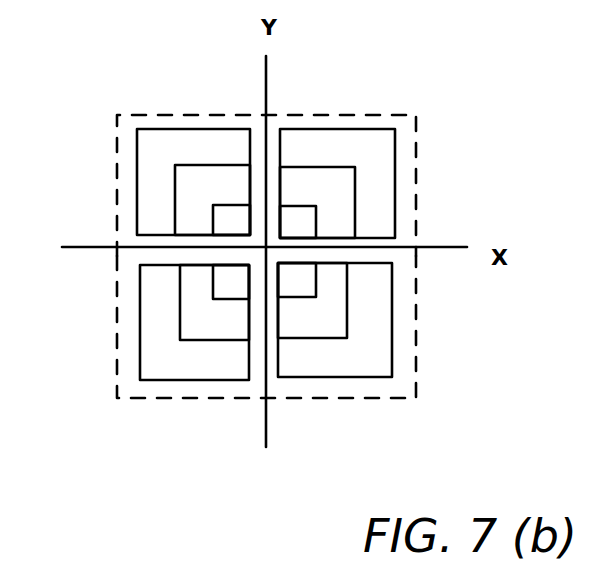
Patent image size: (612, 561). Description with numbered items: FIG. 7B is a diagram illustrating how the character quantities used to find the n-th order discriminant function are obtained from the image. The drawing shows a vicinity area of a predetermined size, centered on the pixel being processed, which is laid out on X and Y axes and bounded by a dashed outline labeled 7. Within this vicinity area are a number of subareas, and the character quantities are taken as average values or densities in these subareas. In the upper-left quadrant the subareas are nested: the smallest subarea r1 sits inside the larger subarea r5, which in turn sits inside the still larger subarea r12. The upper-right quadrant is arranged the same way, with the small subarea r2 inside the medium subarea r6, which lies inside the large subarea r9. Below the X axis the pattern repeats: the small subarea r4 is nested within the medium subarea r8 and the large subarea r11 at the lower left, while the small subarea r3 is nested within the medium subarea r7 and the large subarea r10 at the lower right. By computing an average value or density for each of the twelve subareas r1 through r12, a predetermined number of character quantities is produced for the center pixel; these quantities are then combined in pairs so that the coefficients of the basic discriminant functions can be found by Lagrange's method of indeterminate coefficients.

The subarea r1 is at (228, 205).
The subarea r2 is at (293, 206).
The subarea r3 is at (300, 297).
The subarea r4 is at (243, 299).
The subarea r5 is at (175, 190).
The subarea r6 is at (355, 203).
The subarea r7 is at (347, 308).
The subarea r8 is at (140, 343).
The subarea r9 is at (395, 158).
The subarea r10 is at (392, 353).
The subarea r11 is at (160, 398).
The subarea r12 is at (160, 115).
The search window 7 is at (273, 399).